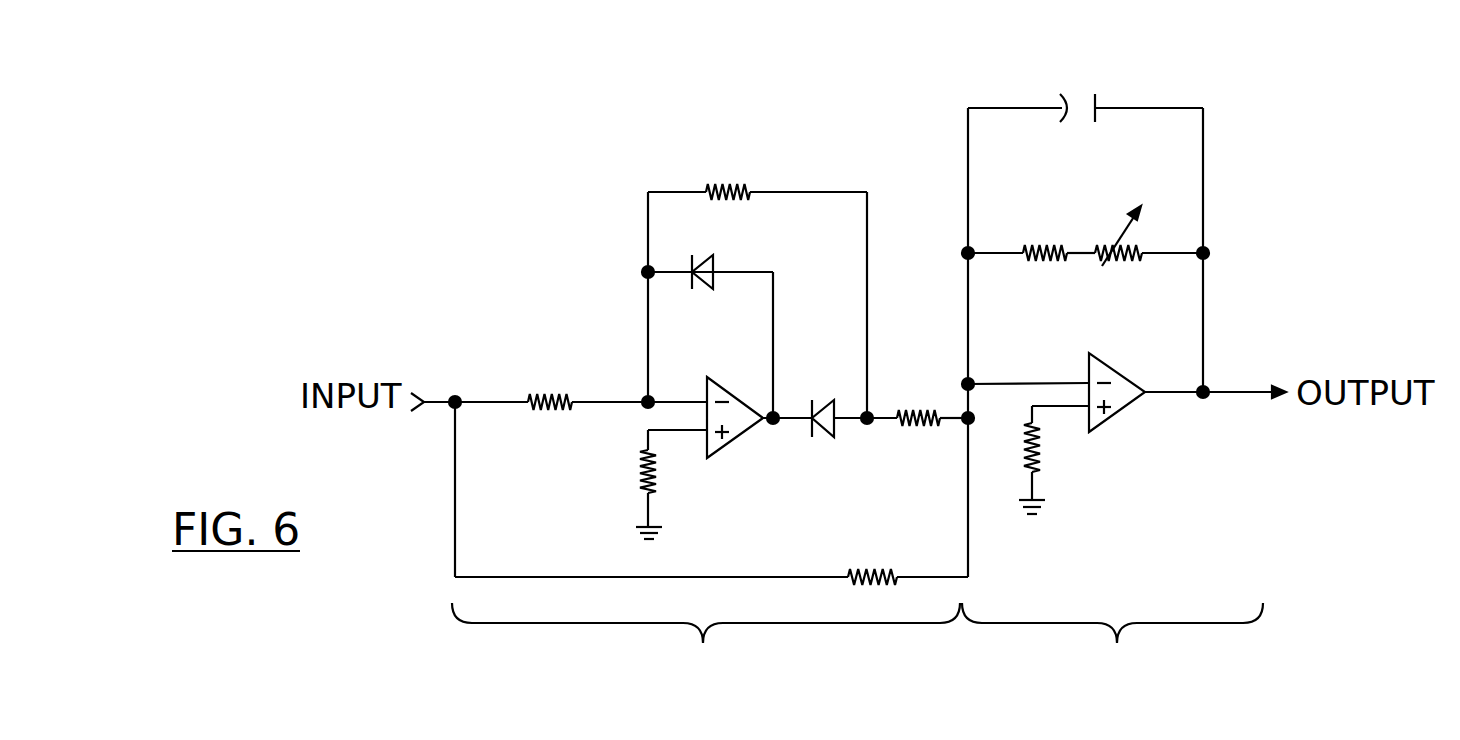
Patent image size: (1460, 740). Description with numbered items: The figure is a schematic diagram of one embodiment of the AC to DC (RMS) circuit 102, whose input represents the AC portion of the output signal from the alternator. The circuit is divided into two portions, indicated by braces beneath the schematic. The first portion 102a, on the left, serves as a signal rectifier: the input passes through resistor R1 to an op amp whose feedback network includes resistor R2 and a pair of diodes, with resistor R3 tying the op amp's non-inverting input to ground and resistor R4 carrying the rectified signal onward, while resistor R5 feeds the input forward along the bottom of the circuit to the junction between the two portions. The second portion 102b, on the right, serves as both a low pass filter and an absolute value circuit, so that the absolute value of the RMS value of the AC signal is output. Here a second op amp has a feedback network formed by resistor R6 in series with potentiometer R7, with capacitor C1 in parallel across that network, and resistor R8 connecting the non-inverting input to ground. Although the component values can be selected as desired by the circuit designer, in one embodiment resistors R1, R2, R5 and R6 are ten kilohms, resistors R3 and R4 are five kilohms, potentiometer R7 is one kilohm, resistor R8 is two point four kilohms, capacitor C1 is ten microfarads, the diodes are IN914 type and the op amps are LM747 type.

The AC to DC (RMS) circuit 102 is at (852, 136).
The first portion of the circuit 102a is at (703, 643).
The second portion of the circuit 102b is at (1117, 643).
The resistor R1 is at (550, 371).
The resistor R2 is at (728, 170).
The resistor R3 is at (669, 476).
The resistor R4 is at (918, 445).
The resistor R5 is at (872, 547).
The resistor R6 is at (1045, 280).
The potentiometer R7 is at (1121, 261).
The resistor R8 is at (1053, 450).
The capacitor C1 is at (1081, 134).